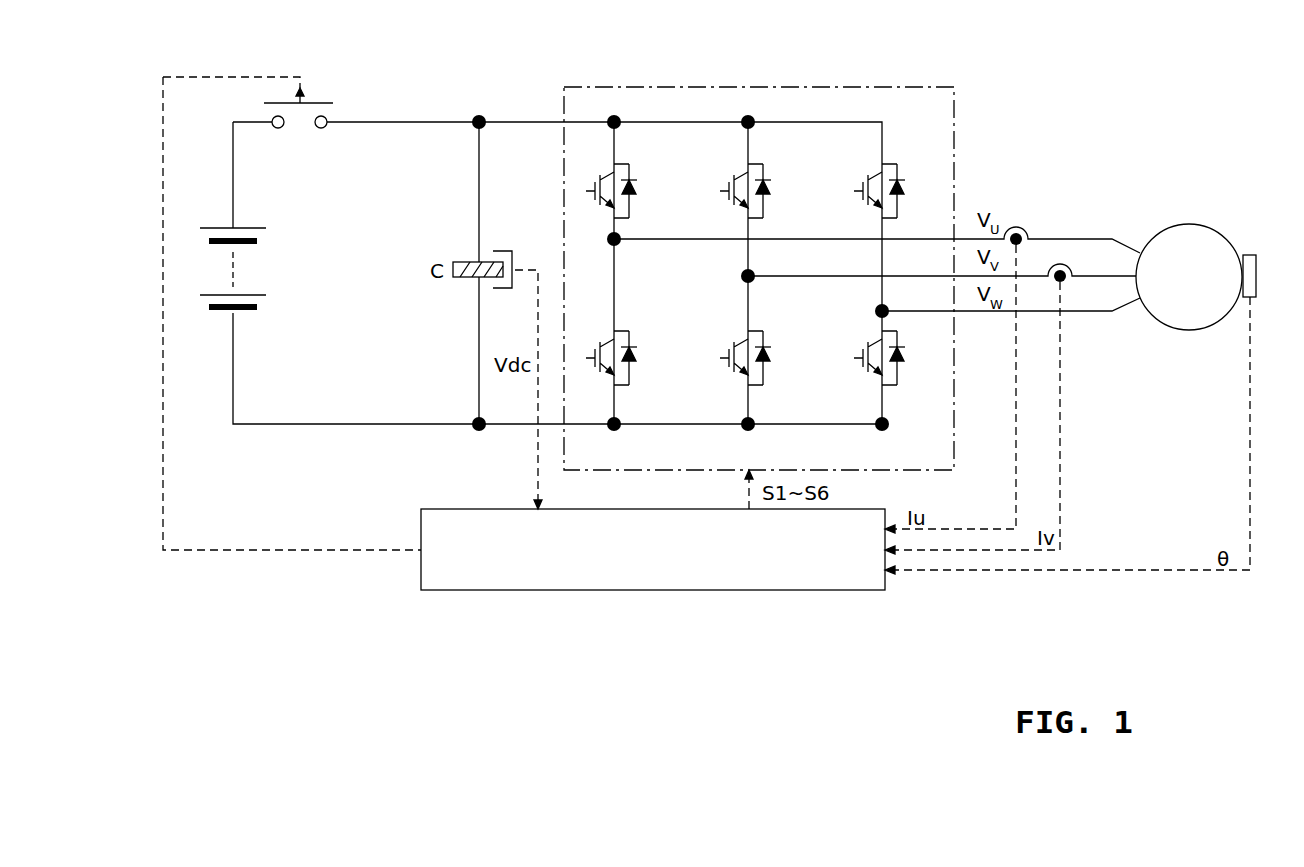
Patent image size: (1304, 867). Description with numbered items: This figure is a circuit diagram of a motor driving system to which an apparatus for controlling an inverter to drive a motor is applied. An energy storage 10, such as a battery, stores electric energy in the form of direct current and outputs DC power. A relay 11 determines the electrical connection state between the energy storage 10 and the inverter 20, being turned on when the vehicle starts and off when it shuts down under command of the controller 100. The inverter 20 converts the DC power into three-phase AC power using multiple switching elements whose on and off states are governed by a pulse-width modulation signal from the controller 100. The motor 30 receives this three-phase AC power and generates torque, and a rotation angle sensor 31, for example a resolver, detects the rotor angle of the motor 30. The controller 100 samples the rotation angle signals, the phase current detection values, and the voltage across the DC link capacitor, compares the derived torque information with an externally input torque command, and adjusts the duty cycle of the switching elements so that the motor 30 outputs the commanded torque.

The energy storage 10 is at (218, 313).
The relay 11 is at (328, 112).
The inverter 20 is at (892, 87).
The motor 30 is at (1190, 224).
The rotation angle sensor 31 is at (1250, 255).
The controller 100 is at (647, 590).